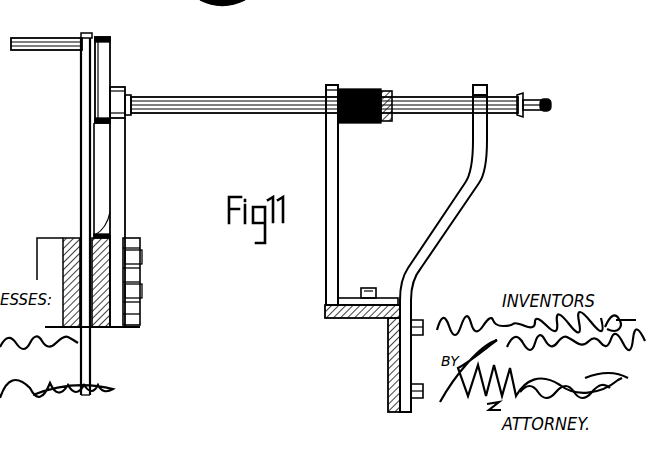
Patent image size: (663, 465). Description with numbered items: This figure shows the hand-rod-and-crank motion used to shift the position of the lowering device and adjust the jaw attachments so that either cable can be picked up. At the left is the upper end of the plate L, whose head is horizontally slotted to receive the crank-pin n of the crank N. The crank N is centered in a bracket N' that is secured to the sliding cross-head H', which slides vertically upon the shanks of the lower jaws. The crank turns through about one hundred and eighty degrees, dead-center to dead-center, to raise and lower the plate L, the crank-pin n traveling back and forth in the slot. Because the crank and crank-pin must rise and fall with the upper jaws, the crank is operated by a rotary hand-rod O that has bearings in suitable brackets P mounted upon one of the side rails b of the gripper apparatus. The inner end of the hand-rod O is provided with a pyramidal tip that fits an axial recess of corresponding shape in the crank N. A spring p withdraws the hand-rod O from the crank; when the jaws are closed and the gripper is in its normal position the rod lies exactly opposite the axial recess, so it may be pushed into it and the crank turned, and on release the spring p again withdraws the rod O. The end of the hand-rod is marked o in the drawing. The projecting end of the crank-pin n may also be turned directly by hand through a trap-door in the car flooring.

The crank-pin n is at (46, 34).
The plate L is at (70, 214).
The crank N is at (111, 80).
The bracket N' is at (120, 207).
The cross-head H' is at (117, 295).
The hand-rod O is at (324, 112).
The shaft end knob o is at (537, 113).
The spring p is at (357, 92).
The brackets P is at (338, 172).
The side rails b is at (345, 318).